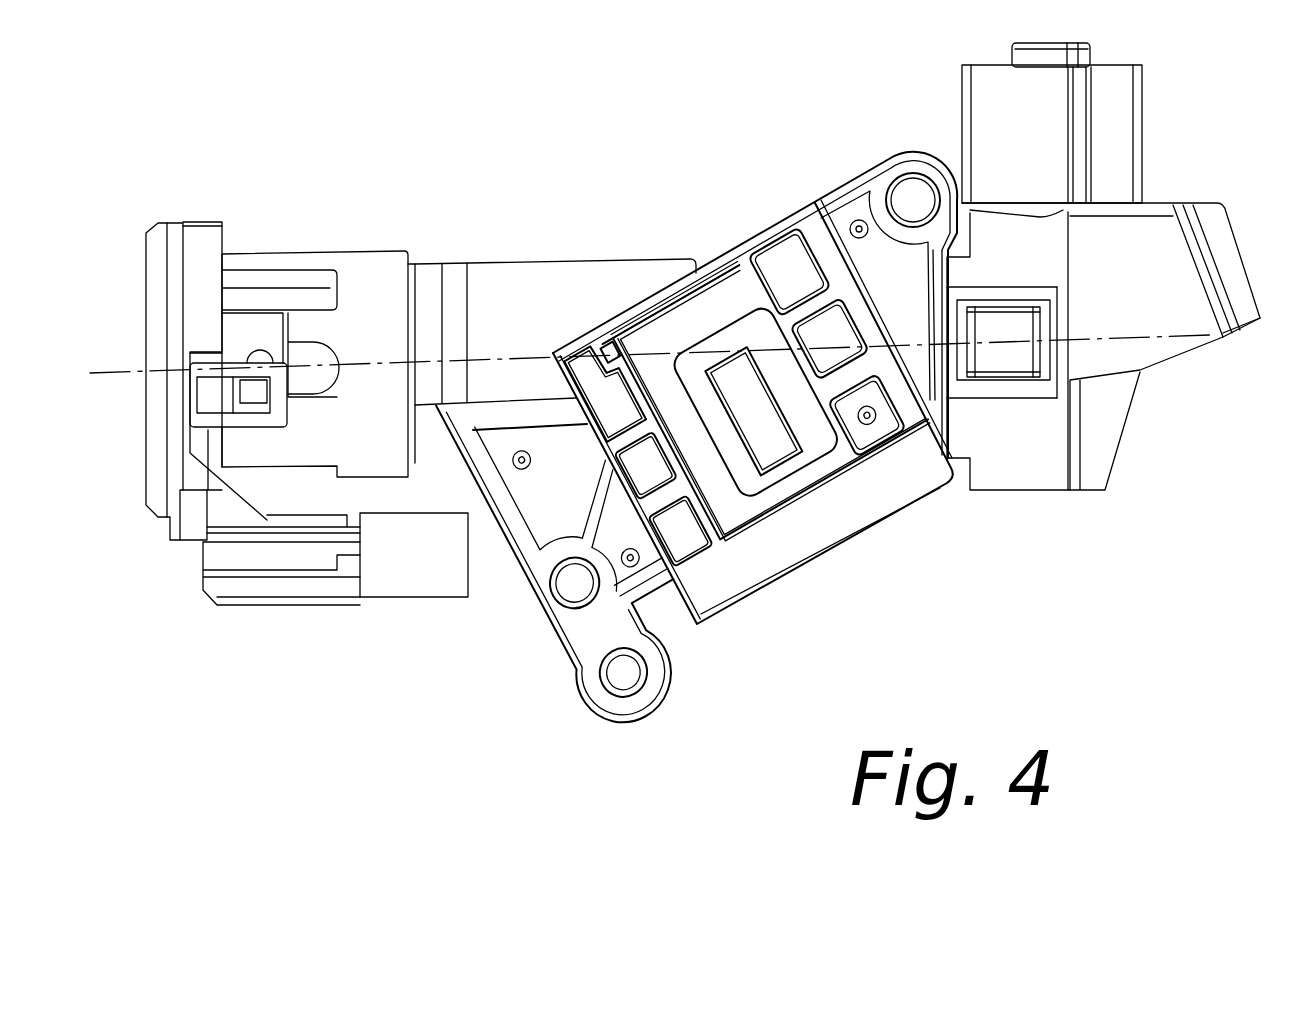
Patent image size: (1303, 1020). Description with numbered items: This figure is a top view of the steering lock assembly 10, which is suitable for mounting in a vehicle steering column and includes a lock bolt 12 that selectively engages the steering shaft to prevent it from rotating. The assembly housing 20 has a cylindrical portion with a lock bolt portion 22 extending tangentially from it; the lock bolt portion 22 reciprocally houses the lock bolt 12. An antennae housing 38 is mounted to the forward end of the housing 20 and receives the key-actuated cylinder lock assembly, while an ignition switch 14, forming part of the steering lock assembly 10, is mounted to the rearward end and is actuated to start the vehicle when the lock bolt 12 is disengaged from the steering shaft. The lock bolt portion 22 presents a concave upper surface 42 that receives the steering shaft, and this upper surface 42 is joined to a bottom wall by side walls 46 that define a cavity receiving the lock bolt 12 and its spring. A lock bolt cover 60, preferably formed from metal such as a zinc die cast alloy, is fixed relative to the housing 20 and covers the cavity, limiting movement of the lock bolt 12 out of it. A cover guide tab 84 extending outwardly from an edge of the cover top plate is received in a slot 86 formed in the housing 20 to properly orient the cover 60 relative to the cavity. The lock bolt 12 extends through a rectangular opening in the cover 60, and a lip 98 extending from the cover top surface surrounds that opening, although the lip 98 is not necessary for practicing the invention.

The steering lock assembly 10 is at (634, 88).
The lock bolt 12 is at (779, 441).
The ignition switch 14 is at (1183, 90).
The assembly housing 20 is at (578, 258).
The lock bolt portion 22 is at (697, 630).
The antennae housing 38 is at (222, 222).
The concave upper surface 42 is at (776, 553).
The side walls 46 is at (680, 290).
The lock bolt cover 60 is at (652, 333).
The cover guide tab 84 is at (603, 347).
The slot 86 is at (598, 345).
The lip 98 is at (806, 448).